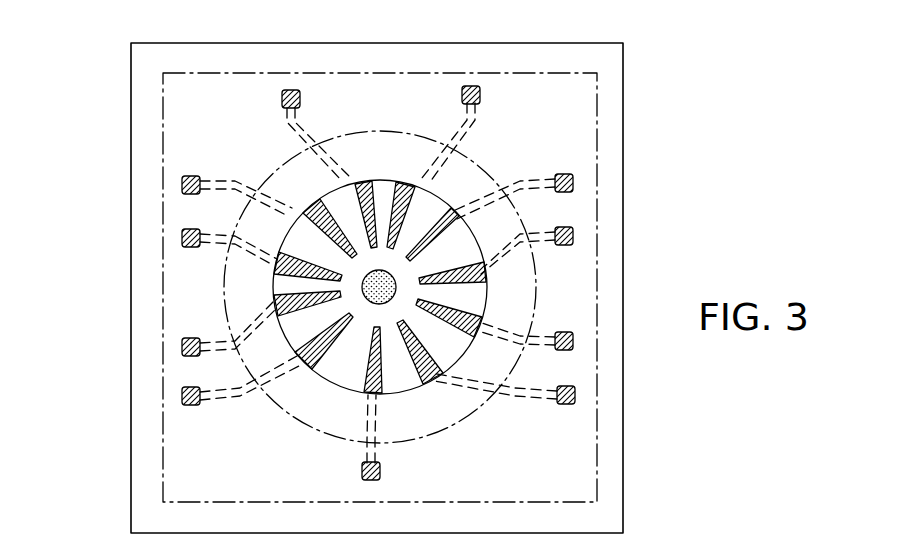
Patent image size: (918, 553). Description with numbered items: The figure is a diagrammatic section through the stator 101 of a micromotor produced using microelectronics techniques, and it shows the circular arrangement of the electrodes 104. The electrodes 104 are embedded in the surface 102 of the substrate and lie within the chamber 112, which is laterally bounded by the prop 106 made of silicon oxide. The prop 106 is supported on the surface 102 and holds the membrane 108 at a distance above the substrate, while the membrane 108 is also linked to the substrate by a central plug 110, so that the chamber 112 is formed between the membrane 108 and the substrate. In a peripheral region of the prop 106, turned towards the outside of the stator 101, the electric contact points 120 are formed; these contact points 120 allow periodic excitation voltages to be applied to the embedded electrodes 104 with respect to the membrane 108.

The stator 101 is at (127, 164).
The surface 102 is at (384, 158).
The electrodes 104 is at (356, 385).
The prop 106 is at (192, 470).
The membrane 108 is at (252, 147).
The central plug 110 is at (373, 298).
The chamber 112 is at (427, 220).
The contact points 120 is at (192, 338).